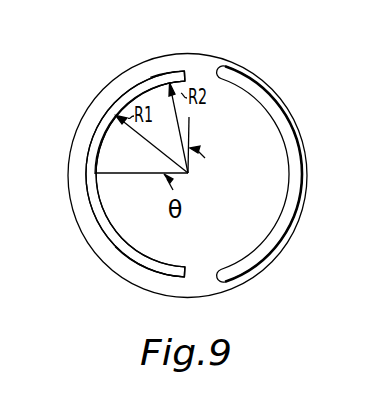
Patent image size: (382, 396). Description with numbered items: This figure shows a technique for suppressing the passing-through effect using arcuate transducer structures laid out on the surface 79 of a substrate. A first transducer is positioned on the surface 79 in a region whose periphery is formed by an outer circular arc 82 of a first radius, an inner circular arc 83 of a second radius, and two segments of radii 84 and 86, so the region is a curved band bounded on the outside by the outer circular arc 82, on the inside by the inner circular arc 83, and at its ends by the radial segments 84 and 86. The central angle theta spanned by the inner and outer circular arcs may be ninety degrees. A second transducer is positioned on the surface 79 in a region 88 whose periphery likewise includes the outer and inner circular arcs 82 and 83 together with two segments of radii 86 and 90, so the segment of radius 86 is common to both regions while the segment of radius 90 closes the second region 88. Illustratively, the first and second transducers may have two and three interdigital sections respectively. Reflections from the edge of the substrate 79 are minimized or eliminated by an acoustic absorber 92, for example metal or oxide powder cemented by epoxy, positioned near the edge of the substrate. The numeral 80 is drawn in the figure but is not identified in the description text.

The surface 79 is at (206, 292).
The arcuate segment 80 is at (123, 95).
The outer circular arc 82 is at (153, 73).
The inner circular arc 83 is at (104, 138).
The segment of radius 84 is at (193, 73).
The segment of radius 86 is at (93, 175).
The region 88 is at (138, 264).
The segment of radius 90 is at (188, 272).
The acoustic absorber 92 is at (252, 70).